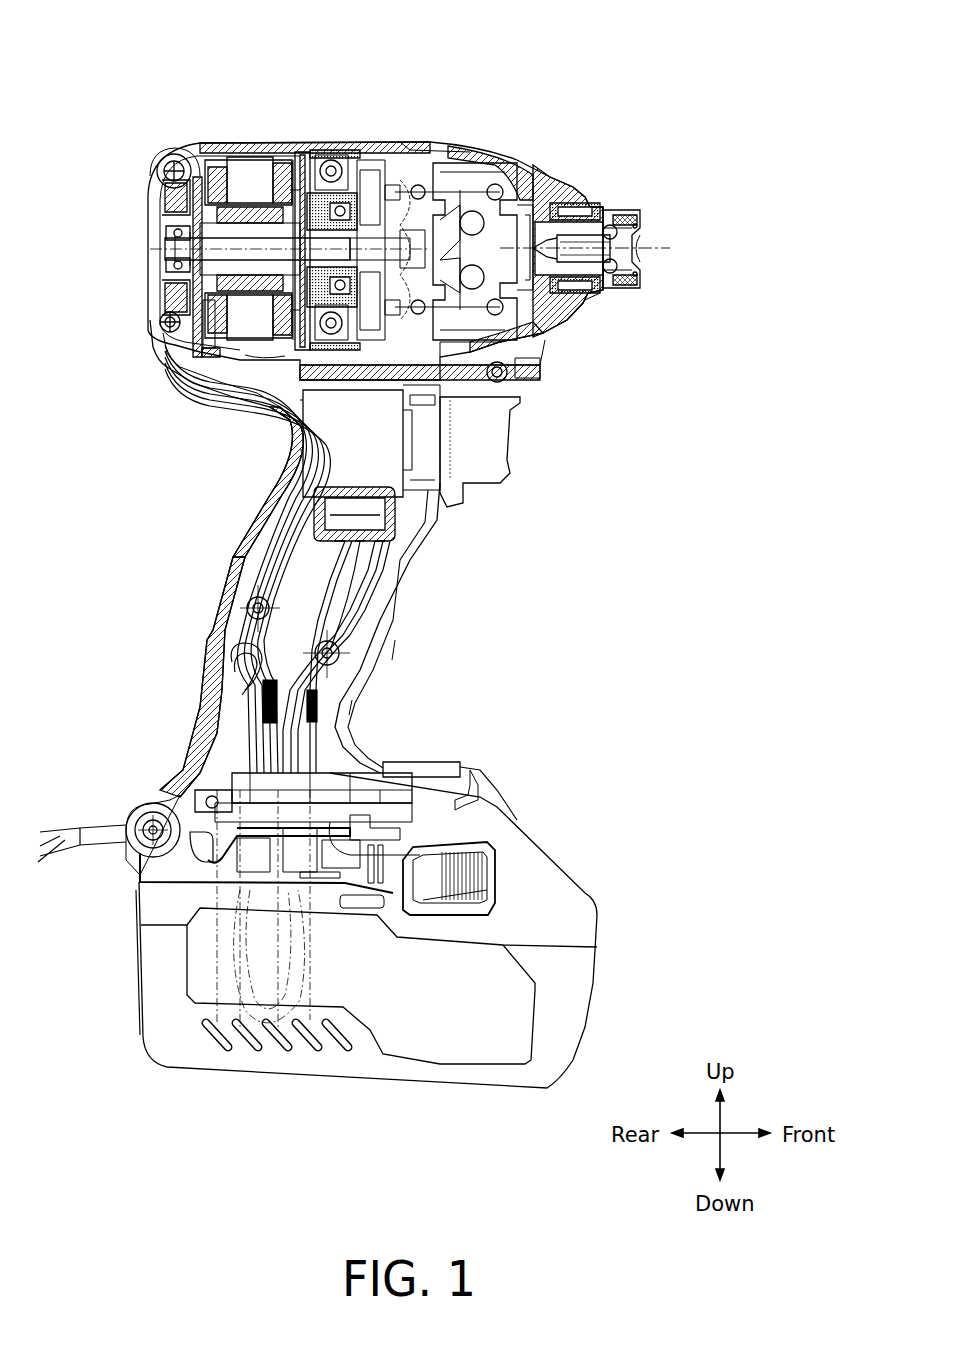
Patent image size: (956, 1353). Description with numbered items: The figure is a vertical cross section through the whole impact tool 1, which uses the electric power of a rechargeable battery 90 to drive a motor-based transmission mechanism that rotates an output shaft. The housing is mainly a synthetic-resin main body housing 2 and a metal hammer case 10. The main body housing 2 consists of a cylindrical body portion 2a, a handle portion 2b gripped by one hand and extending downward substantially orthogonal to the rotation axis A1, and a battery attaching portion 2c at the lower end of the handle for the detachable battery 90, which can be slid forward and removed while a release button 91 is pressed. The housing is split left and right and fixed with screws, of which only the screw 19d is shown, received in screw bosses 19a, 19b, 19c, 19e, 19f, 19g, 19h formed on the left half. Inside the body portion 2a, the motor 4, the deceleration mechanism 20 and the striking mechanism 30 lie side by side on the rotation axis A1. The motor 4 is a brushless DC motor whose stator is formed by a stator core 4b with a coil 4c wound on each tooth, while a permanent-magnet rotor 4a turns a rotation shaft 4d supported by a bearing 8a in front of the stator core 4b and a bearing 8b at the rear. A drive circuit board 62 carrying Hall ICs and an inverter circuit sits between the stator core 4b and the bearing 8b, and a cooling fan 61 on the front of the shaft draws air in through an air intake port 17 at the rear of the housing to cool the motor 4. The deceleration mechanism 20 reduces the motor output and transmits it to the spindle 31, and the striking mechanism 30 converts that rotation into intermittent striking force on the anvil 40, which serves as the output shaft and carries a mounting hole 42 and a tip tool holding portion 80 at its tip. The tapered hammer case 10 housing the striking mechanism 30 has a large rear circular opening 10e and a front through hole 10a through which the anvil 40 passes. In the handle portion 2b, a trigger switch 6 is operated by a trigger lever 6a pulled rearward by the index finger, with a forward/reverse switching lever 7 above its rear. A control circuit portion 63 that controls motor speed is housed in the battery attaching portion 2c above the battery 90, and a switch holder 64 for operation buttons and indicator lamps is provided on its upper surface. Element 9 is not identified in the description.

The impact tool 1 is at (650, 113).
The main body housing 2 is at (246, 598).
The body portion 2a is at (150, 400).
The handle portion 2b is at (220, 580).
The battery attaching portion 2c is at (150, 780).
The motor 4 is at (290, 190).
The rotor 4a is at (233, 223).
The stator core 4b is at (250, 157).
The coil 4c is at (212, 160).
The rotation shaft 4d is at (275, 207).
The trigger switch 6 is at (395, 495).
The trigger lever 6a is at (500, 470).
The forward/reverse switching lever 7 is at (440, 400).
The bearing 8a is at (255, 363).
The bearing 8b is at (166, 233).
The fan 9 is at (250, 340).
The hammer case 10 is at (555, 170).
The through hole 10a is at (610, 290).
The circular opening 10e is at (440, 138).
The air intake port 17 is at (162, 200).
The screw boss 19a is at (515, 386).
The screw boss 19b is at (335, 152).
The screw boss 19c is at (270, 385).
The screw 19d is at (160, 160).
The screw boss 19e is at (160, 322).
The screw boss 19f is at (340, 651).
The screw boss 19g is at (245, 608).
The screw boss 19h is at (140, 845).
The deceleration mechanism 20 is at (368, 150).
The striking mechanism 30 is at (522, 163).
The spindle 31 is at (472, 150).
The anvil 40 is at (580, 230).
The mounting hole 42 is at (640, 262).
The cooling fan 61 is at (303, 152).
The drive circuit board 62 is at (190, 345).
The control circuit portion 63 is at (355, 790).
The switch holder 64 is at (455, 762).
The tip tool holding portion 80 is at (637, 214).
The battery 90 is at (590, 925).
The release button 91 is at (487, 867).
The rotation axis A1 is at (597, 249).